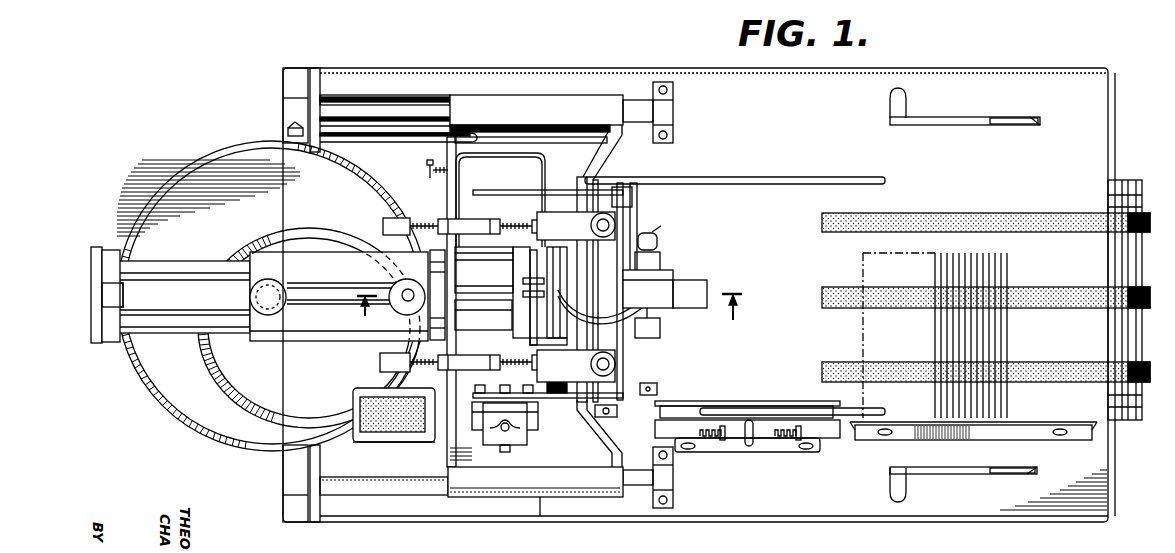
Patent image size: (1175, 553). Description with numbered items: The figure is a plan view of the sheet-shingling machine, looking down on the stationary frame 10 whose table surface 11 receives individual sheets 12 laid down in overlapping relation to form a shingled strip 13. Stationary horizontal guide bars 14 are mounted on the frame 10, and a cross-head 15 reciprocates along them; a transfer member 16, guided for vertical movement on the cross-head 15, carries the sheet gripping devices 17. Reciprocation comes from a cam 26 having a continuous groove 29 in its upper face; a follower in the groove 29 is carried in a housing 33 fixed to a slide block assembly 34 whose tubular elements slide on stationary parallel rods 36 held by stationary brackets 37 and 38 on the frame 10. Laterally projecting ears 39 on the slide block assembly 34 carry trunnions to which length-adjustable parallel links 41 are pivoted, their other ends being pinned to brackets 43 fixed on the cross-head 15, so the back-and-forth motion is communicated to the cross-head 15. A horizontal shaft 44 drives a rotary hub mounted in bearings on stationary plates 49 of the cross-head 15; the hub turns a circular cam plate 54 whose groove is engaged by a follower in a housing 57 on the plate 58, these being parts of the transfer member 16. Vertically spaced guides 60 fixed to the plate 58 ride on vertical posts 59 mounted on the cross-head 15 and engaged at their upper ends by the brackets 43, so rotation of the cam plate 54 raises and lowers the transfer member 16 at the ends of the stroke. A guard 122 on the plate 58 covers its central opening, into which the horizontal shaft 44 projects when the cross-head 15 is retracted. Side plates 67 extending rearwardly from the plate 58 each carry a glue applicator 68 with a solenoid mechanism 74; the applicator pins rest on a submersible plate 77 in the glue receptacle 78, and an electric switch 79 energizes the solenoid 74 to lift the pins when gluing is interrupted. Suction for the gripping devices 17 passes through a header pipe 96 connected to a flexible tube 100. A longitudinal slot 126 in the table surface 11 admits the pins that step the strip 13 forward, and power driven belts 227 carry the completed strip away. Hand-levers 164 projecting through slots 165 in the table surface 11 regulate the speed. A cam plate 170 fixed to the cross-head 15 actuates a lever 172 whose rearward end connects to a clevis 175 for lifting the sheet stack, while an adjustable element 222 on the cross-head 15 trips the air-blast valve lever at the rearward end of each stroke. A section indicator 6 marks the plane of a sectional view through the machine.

The section line 6 is at (550, 316).
The stationary frame 10 is at (1026, 68).
The table surface 11 is at (1105, 100).
The individual sheets 12 is at (1000, 276).
The shingled strip 13 is at (931, 252).
The stationary horizontal guide bars 14 is at (366, 105).
The cross-head 15 is at (495, 499).
The transfer member 16 is at (630, 228).
The sheet gripping devices 17 is at (628, 421).
The cam 26 is at (162, 207).
The continuous groove 29 is at (294, 230).
The housing 33 is at (395, 290).
The slide block assembly 34 is at (295, 341).
The stationary parallel rods 36 is at (206, 264).
The stationary bracket 37 is at (98, 292).
The stationary bracket 38 is at (447, 263).
The laterally projecting ears 39 is at (380, 235).
The parallel links 41 is at (464, 222).
The brackets 43 is at (568, 213).
The horizontal shaft 44 is at (492, 292).
The stationary plates 49 is at (516, 318).
The circular cam plate 54 is at (593, 265).
The housing 57 is at (666, 280).
The plate 58 is at (616, 192).
The vertical posts 59 is at (606, 224).
The vertically spaced guides 60 is at (588, 382).
The side plates 67 is at (515, 190).
The glue applicator 68 is at (480, 432).
The solenoid mechanism 74 is at (528, 447).
The submersible plate 77 is at (405, 433).
The glue receptacle 78 is at (372, 447).
The electric switch 79 is at (506, 453).
The header pipe 96 is at (652, 252).
The flexible tube 100 is at (650, 306).
The guard 122 is at (701, 288).
The longitudinal slot 126 is at (798, 177).
The hand-levers 164 is at (970, 118).
The slots 165 is at (1032, 118).
The cam plate 170 is at (562, 140).
The lever 172 is at (437, 120).
The clevis 175 is at (288, 132).
The adjustable element 222 is at (429, 169).
The power driven belts 227 is at (1036, 213).